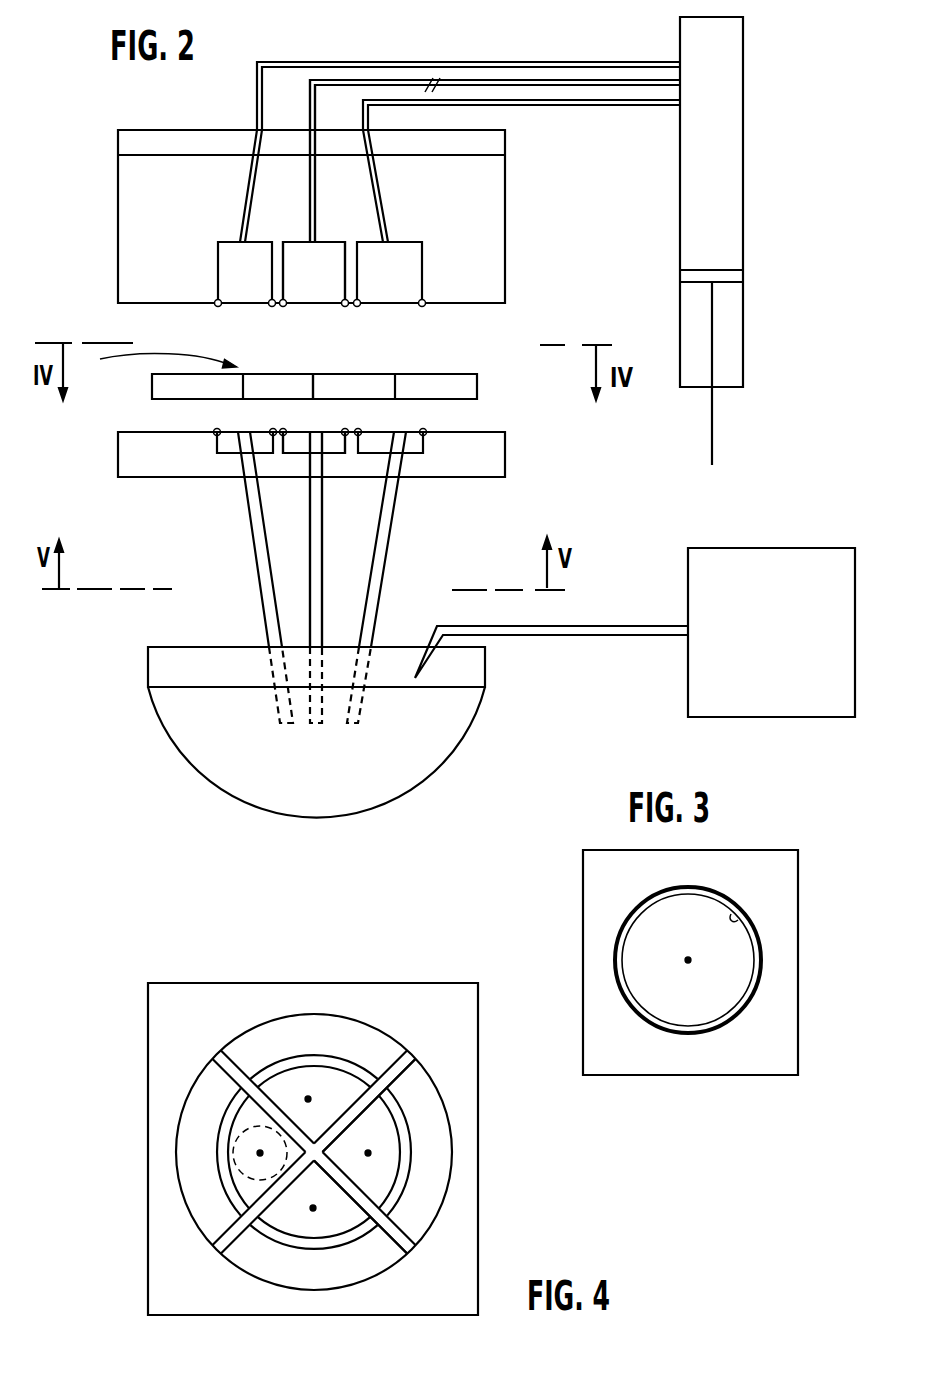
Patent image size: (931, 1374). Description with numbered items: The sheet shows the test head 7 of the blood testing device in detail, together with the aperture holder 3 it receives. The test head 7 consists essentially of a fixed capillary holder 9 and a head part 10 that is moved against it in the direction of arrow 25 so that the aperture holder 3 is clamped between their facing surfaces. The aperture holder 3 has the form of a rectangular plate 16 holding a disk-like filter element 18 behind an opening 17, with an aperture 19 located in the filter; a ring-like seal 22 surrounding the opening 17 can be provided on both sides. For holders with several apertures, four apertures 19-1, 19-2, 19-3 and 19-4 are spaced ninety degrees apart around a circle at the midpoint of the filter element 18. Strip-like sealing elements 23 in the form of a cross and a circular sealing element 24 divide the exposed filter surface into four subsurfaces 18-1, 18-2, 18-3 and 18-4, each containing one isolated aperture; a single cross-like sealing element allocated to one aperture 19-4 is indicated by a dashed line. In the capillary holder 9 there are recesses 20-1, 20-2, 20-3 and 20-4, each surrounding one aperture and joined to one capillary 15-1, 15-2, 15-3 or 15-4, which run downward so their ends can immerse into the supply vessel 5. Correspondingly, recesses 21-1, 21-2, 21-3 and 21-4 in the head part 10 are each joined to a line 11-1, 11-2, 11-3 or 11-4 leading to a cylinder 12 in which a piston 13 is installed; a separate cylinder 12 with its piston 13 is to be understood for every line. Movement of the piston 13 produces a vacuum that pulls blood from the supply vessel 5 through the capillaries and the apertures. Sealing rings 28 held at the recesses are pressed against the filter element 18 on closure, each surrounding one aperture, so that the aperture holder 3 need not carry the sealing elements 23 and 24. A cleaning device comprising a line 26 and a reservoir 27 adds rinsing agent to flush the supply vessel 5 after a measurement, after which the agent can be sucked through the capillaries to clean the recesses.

In FIG. 2, the aperture holder 3 is at (337, 355).
In FIG. 3, the aperture holder 3 is at (712, 941).
In FIG. 4, the aperture holder 3 is at (205, 983).
In FIG. 2, the supply vessel 5 is at (205, 762).
In FIG. 2, the test head 7 is at (85, 317).
In FIG. 2, the capillary holder 9 is at (493, 475).
In FIG. 2, the head part 10 is at (505, 238).
In FIG. 2, the line 11-1 is at (457, 80).
In FIG. 2, the line 11-2 is at (572, 102).
In FIG. 2, the line 11-3 is at (495, 134).
In FIG. 2, the line 11-4 is at (300, 62).
In FIG. 2, the cylinder 12 is at (743, 163).
In FIG. 2, the piston 13 is at (743, 276).
In FIG. 2, the capillary 15-1 is at (316, 520).
In FIG. 2, the capillary 15-2 is at (381, 555).
In FIG. 2, the capillary 15-3 is at (346, 539).
In FIG. 2, the capillary 15-4 is at (256, 548).
In FIG. 3, the rectangular plate 16 is at (712, 962).
In FIG. 3, the opening 17 is at (738, 920).
In FIG. 3, the filter element 18 is at (735, 980).
In FIG. 4, the filter element 18 is at (380, 1187).
In FIG. 4, the filter subsurface 18-1 is at (333, 1077).
In FIG. 4, the filter subsurface 18-2 is at (388, 1135).
In FIG. 4, the filter subsurface 18-3 is at (333, 1227).
In FIG. 4, the filter subsurface 18-4 is at (240, 1168).
In FIG. 3, the aperture 19 is at (690, 958).
In FIG. 2, the aperture 19-1 is at (320, 387).
In FIG. 4, the aperture 19-1 is at (308, 1098).
In FIG. 2, the aperture 19-2 is at (397, 390).
In FIG. 4, the aperture 19-2 is at (368, 1153).
In FIG. 2, the aperture 19-3 is at (369, 368).
In FIG. 4, the aperture 19-3 is at (313, 1208).
In FIG. 2, the aperture 19-4 is at (245, 385).
In FIG. 4, the aperture 19-4 is at (260, 1153).
In FIG. 2, the recess 20-1 is at (297, 445).
In FIG. 2, the recess 20-2 is at (425, 445).
In FIG. 2, the recess 20-3 is at (243, 486).
In FIG. 2, the recess 20-4 is at (220, 443).
In FIG. 2, the recess 21-1 is at (323, 248).
In FIG. 2, the recess 21-2 is at (413, 258).
In FIG. 2, the recess 21-3 is at (326, 246).
In FIG. 2, the recess 21-4 is at (222, 258).
In FIG. 3, the seal 22 is at (615, 952).
In FIG. 4, the sealing element 23 is at (273, 1193).
In FIG. 4, the sealing element 24 is at (365, 1232).
In FIG. 2, the arrow 25 is at (129, 358).
In FIG. 2, the line 26 is at (592, 627).
In FIG. 2, the reservoir 27 is at (740, 552).
In FIG. 2, the sealing ring 28 is at (424, 430).